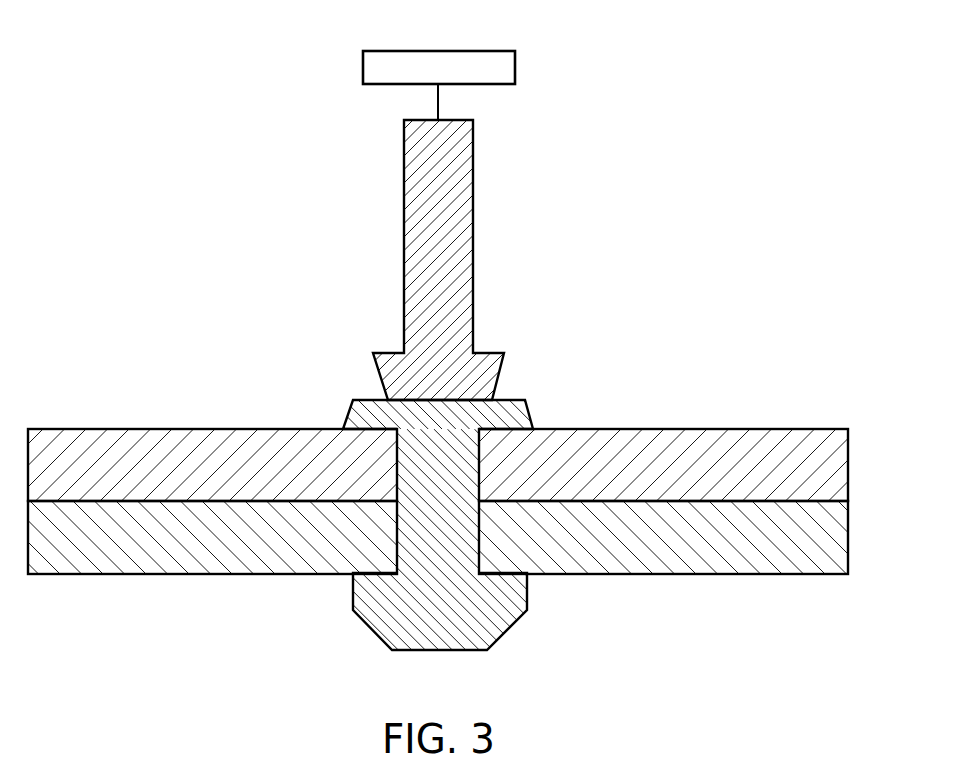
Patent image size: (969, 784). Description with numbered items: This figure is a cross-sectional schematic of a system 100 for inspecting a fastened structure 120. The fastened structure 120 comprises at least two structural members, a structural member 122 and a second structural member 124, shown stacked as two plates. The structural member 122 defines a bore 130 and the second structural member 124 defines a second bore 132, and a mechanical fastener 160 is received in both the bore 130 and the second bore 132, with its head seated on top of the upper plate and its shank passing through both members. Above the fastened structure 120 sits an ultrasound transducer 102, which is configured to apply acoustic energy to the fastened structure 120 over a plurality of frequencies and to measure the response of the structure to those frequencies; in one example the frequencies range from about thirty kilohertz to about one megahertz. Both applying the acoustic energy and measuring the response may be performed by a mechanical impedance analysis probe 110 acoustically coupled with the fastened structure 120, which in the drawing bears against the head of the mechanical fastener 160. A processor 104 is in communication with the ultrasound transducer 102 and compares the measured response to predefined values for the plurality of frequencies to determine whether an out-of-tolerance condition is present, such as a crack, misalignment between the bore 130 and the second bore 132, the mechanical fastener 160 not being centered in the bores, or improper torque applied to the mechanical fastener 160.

The system 100 is at (697, 66).
The ultrasound transducer 102 is at (473, 288).
The processor 104 is at (515, 67).
The mechanical impedance analysis probe 110 is at (455, 260).
The fastened structure 120 is at (461, 461).
The structural member 122 is at (848, 463).
The second structural member 124 is at (848, 540).
The bore 130 is at (479, 450).
The second bore 132 is at (397, 553).
The mechanical fastener 160 is at (533, 413).